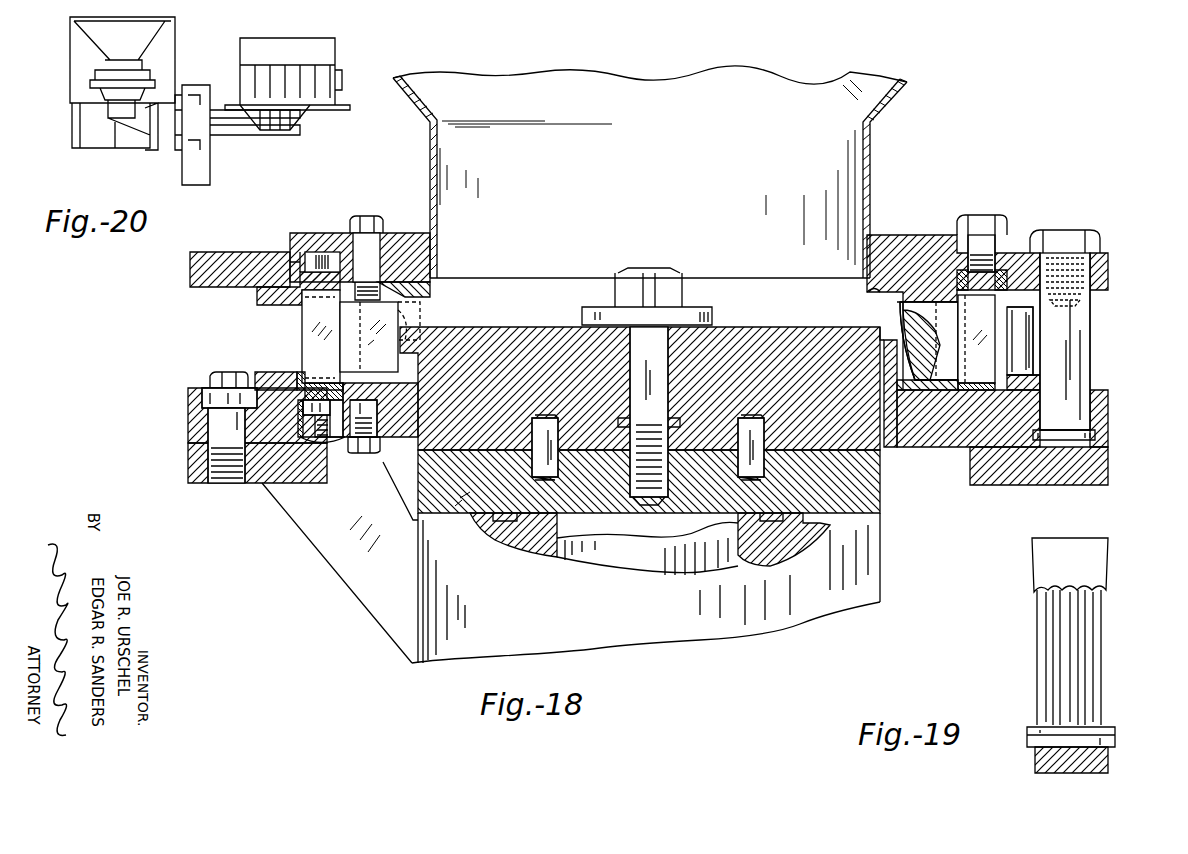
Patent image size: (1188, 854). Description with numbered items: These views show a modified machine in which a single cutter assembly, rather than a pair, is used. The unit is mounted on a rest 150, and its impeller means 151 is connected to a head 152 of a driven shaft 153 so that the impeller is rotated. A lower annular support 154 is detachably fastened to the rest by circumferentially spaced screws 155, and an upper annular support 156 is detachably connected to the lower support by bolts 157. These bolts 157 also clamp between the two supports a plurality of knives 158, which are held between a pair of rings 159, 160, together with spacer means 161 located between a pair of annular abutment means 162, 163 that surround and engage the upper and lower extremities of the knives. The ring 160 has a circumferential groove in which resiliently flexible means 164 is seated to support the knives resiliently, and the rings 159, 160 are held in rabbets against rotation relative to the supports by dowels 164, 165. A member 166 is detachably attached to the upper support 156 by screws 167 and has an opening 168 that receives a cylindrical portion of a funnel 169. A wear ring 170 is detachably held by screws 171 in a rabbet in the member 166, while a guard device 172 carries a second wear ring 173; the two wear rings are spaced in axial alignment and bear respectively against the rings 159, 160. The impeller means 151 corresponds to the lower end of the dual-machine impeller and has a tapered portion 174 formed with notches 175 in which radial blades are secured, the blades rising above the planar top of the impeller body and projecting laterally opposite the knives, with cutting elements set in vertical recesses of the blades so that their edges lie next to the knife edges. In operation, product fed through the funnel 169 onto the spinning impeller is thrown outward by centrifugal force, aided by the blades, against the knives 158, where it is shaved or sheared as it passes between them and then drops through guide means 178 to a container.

In FIG. 18, the rest 150 is at (190, 469).
In FIG. 18, the impeller means 151 is at (754, 323).
In FIG. 18, the head 152 is at (448, 508).
In FIG. 18, the driven shaft 153 is at (650, 562).
In FIG. 18, the lower annular support 154 is at (190, 432).
In FIG. 18, the screws 155 is at (222, 421).
In FIG. 18, the upper annular support 156 is at (200, 271).
In FIG. 18, the bolts 157 is at (1082, 328).
In FIG. 18, the knives 158 is at (296, 326).
In FIG. 19, the knives 158 is at (1092, 643).
In FIG. 18, the ring 159 is at (288, 250).
In FIG. 19, the ring 159 is at (1100, 561).
In FIG. 18, the ring 160 is at (302, 372).
In FIG. 19, the ring 160 is at (1100, 762).
In FIG. 18, the spacer means 161 is at (1020, 342).
In FIG. 18, the annular abutment means 162 is at (258, 300).
In FIG. 18, the annular abutment means 163 is at (256, 372).
In FIG. 19, the resiliently flexible means 164 is at (1102, 742).
In FIG. 18, the dowel 165 is at (300, 420).
In FIG. 18, the member 166 is at (422, 216).
In FIG. 18, the screws 167 is at (990, 215).
In FIG. 18, the opening 168 is at (878, 243).
In FIG. 18, the funnel 169 is at (866, 158).
In FIG. 18, the wear ring 170 is at (420, 290).
In FIG. 18, the screws 171 is at (365, 216).
In FIG. 18, the guard device 172 is at (408, 444).
In FIG. 18, the wear ring 173 is at (343, 383).
In FIG. 18, the tapered portion 174 is at (905, 320).
In FIG. 18, the notches 175 is at (396, 318).
In FIG. 20, the guide means 178 is at (70, 44).